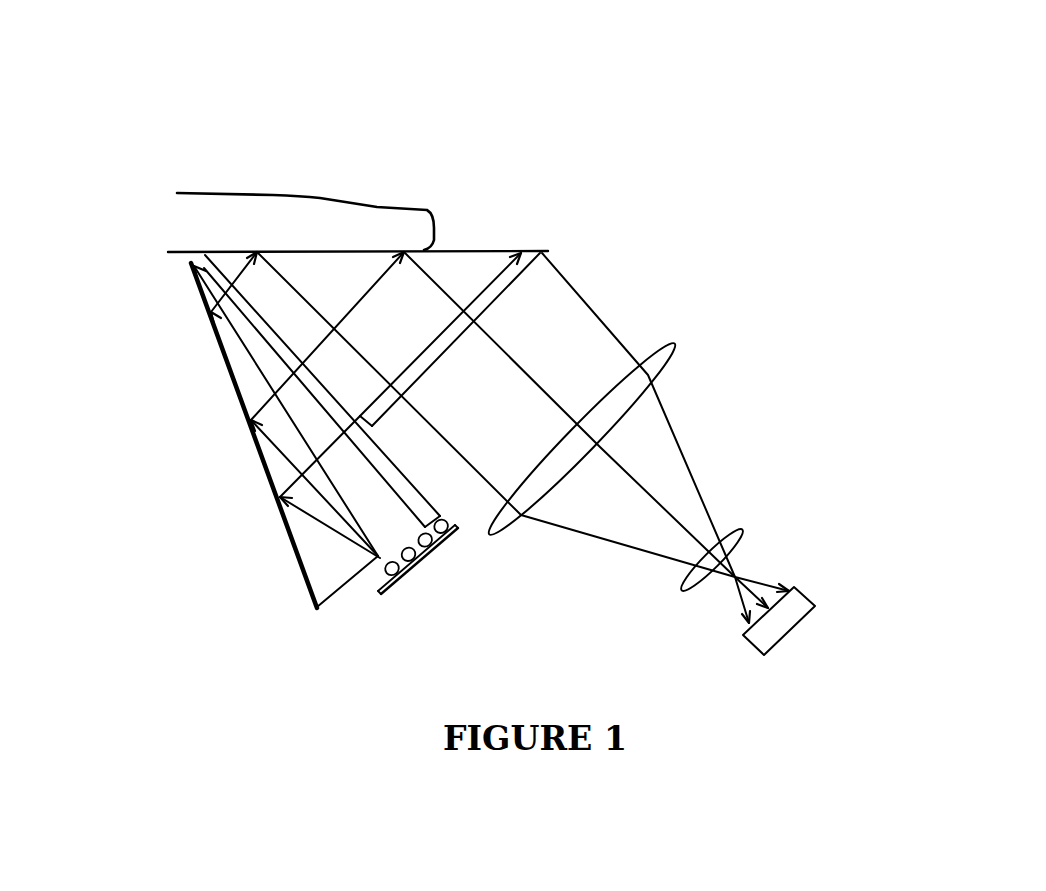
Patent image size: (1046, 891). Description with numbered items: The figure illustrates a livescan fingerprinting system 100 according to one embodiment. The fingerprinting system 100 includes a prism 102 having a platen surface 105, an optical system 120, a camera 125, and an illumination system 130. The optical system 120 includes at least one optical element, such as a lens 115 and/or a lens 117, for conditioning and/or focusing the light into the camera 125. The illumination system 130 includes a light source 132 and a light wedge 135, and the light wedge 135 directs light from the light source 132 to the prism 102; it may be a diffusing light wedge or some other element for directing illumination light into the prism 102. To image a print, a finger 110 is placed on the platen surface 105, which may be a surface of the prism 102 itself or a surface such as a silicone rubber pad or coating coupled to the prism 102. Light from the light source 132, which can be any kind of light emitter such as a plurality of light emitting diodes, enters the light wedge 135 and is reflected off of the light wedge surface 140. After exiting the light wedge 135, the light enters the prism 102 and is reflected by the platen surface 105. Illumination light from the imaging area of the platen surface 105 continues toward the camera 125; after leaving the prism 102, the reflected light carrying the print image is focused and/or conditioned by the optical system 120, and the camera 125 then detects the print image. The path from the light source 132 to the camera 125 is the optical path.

The livescan fingerprinting system 100 is at (723, 83).
The prism 102 is at (430, 375).
The platen surface 105 is at (548, 251).
The finger 110 is at (273, 195).
The lens 115 is at (680, 350).
The lens 117 is at (740, 530).
The optical system 120 is at (688, 302).
The camera 125 is at (810, 605).
The illumination system 130 is at (327, 673).
The light source 132 is at (444, 568).
The light wedge 135 is at (330, 563).
The light wedge surface 140 is at (288, 535).